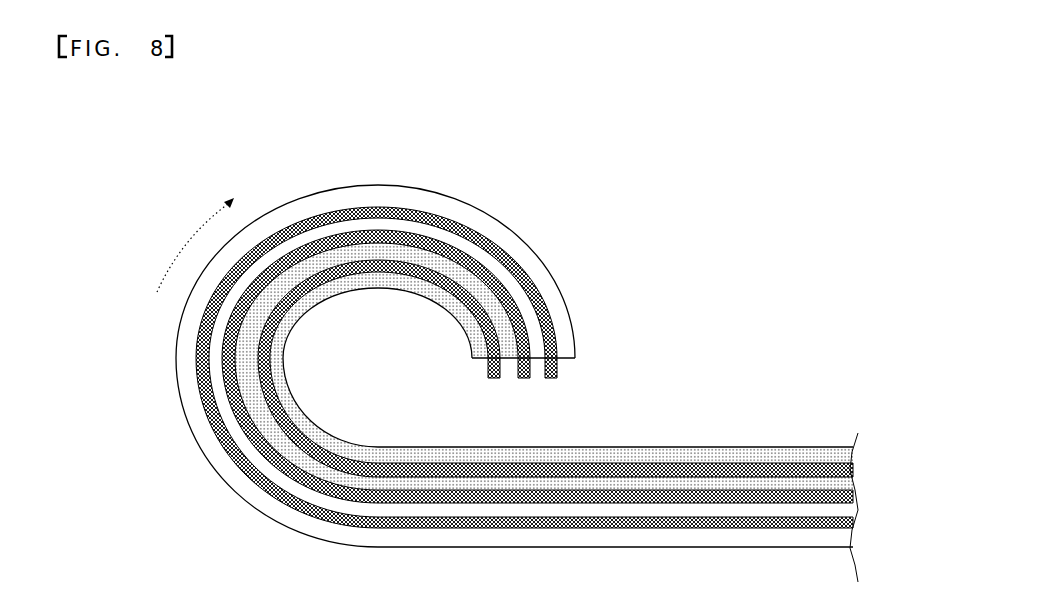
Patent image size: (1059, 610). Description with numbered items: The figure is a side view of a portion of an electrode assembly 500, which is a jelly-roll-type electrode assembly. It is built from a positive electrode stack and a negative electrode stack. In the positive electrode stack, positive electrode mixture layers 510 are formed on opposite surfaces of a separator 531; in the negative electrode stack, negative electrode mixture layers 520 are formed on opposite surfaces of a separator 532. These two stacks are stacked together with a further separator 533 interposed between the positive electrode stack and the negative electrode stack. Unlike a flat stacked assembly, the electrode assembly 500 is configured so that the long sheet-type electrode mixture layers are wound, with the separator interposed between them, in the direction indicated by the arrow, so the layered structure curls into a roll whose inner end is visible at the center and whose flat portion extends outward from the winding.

The electrode assembly 500 is at (122, 177).
The positive electrode mixture layers 510 is at (574, 334).
The negative electrode mixture layers 520 is at (469, 348).
The separator 531 is at (558, 372).
The separator 532 is at (488, 372).
The separator 533 is at (525, 378).